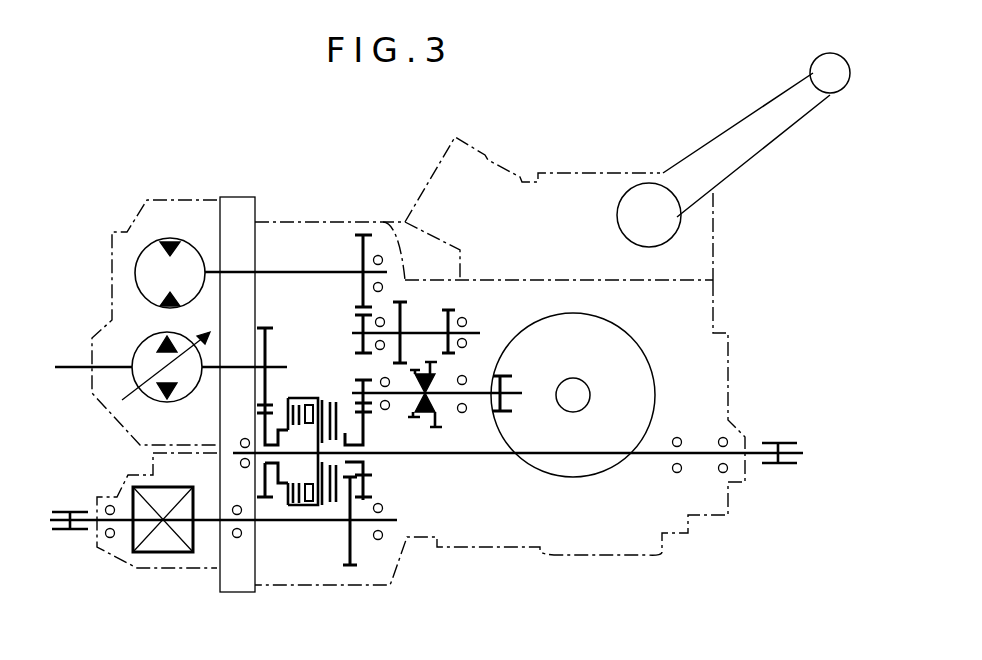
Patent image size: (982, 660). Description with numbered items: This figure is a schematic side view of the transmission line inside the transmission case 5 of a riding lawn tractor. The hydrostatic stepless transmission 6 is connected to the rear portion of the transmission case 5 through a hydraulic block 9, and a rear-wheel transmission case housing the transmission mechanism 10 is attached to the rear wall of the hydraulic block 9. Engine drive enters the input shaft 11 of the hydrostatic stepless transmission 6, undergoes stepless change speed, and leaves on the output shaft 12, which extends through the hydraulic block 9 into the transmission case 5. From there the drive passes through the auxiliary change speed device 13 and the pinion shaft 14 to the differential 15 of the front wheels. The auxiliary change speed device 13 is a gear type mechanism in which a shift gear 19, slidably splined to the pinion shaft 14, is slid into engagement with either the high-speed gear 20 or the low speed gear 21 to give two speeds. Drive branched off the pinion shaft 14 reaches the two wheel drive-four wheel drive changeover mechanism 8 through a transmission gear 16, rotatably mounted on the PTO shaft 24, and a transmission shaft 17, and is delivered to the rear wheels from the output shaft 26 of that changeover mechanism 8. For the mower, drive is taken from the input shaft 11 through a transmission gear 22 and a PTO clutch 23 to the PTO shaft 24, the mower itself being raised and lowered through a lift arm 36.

The transmission case 5 is at (312, 220).
The hydrostatic stepless transmission 6 is at (116, 268).
The two wheel drive-four wheel drive changeover mechanism 8 is at (133, 545).
The hydraulic block 9 is at (236, 195).
The transmission mechanism 10 is at (147, 572).
The input shaft 11 is at (62, 365).
The output shaft 12 is at (312, 270).
The auxiliary change speed device 13 is at (457, 300).
The pinion shaft 14 is at (480, 380).
The differential 15 is at (633, 330).
The transmission gear 16 is at (367, 472).
The transmission shaft 17 is at (278, 524).
The shift gear 19 is at (440, 420).
The high-speed gear 20 is at (403, 318).
The low speed gear 21 is at (456, 318).
The transmission gear 22 is at (262, 430).
The PTO clutch 23 is at (305, 398).
The PTO shaft 24 is at (647, 455).
The output shaft 26 is at (57, 505).
The lift arm 36 is at (768, 103).